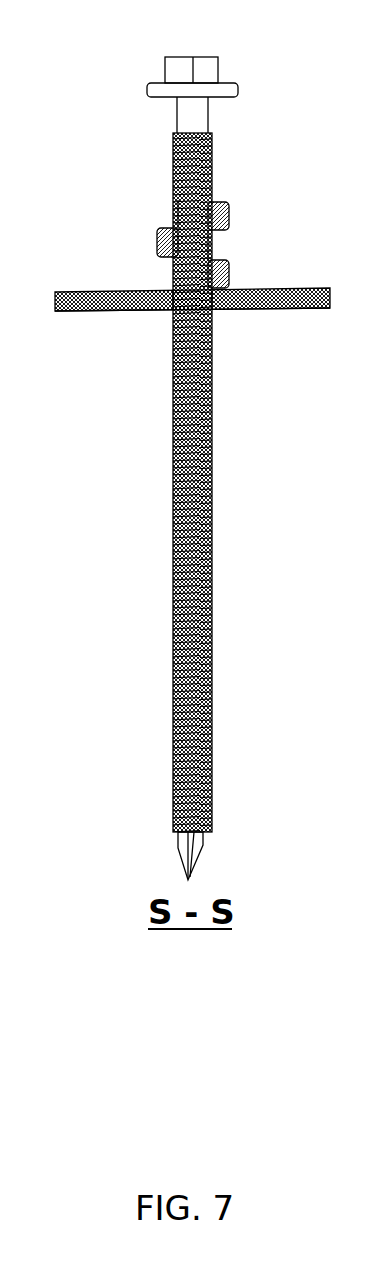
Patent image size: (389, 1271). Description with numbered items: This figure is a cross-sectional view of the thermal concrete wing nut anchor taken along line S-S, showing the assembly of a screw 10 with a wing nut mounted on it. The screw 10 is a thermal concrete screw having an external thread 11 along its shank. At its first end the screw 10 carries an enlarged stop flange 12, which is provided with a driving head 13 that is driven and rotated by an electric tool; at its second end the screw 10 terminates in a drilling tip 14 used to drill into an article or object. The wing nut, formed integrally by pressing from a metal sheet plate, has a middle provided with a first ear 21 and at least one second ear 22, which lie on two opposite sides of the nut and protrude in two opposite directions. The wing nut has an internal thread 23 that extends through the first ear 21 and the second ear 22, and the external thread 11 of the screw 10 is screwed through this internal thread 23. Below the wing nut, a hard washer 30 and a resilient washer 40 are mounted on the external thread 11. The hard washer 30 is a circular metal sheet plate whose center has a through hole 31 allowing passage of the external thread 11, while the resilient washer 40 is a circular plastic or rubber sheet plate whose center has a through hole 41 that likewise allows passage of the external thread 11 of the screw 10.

The screw 10 is at (152, 56).
The external thread 11 is at (212, 245).
The stop flange 12 is at (149, 88).
The driving head 13 is at (214, 72).
The drilling tip 14 is at (178, 850).
The first ear 21 is at (157, 243).
The second ear 22 is at (228, 210).
The internal thread 23 is at (203, 207).
The hard washer 30 is at (82, 291).
The through hole 31 is at (173, 292).
The resilient washer 40 is at (83, 290).
The through hole 41 is at (213, 298).